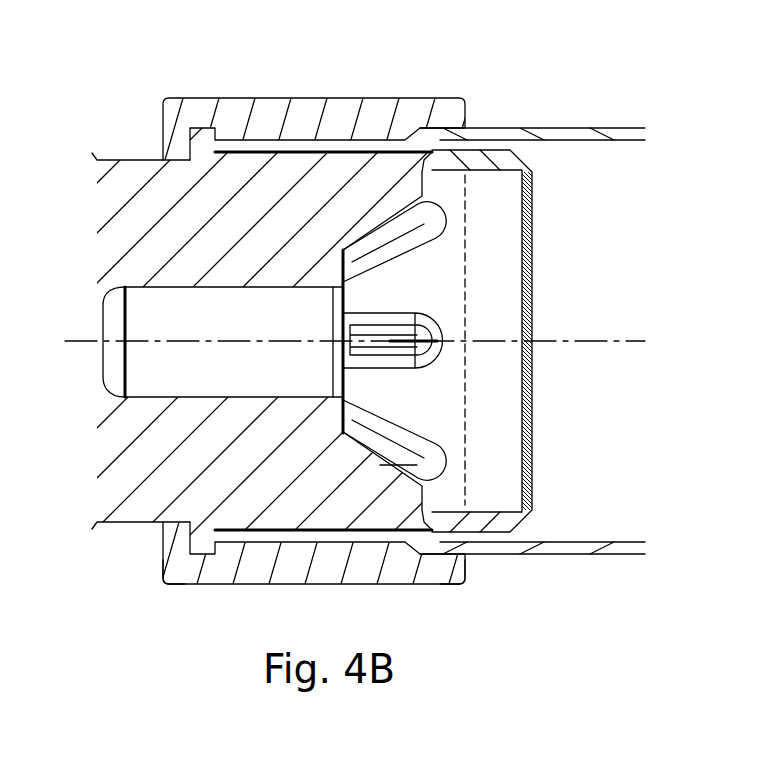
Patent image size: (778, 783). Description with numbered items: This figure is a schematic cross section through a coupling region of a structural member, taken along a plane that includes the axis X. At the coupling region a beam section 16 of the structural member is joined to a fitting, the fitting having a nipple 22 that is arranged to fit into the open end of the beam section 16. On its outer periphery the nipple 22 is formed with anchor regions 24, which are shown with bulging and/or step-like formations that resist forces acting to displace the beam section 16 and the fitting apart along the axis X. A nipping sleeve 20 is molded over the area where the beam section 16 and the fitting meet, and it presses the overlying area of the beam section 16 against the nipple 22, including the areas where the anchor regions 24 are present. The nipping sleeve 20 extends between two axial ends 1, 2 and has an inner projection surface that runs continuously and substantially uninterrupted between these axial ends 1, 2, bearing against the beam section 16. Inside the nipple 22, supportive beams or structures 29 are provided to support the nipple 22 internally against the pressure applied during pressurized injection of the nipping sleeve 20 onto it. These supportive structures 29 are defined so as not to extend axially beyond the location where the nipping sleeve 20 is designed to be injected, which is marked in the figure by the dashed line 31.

The axial end 1 is at (460, 582).
The axial end 2 is at (163, 583).
The beam section 16 is at (480, 128).
The nipping sleeve 20 is at (390, 97).
The nipple 22 is at (130, 150).
The anchor region 24 is at (298, 150).
The supportive beam/structure 29 is at (380, 222).
The dashed line 31 is at (473, 443).
The axis X is at (585, 341).